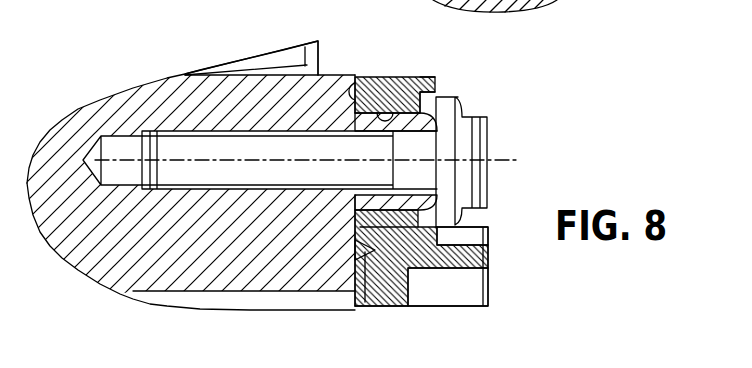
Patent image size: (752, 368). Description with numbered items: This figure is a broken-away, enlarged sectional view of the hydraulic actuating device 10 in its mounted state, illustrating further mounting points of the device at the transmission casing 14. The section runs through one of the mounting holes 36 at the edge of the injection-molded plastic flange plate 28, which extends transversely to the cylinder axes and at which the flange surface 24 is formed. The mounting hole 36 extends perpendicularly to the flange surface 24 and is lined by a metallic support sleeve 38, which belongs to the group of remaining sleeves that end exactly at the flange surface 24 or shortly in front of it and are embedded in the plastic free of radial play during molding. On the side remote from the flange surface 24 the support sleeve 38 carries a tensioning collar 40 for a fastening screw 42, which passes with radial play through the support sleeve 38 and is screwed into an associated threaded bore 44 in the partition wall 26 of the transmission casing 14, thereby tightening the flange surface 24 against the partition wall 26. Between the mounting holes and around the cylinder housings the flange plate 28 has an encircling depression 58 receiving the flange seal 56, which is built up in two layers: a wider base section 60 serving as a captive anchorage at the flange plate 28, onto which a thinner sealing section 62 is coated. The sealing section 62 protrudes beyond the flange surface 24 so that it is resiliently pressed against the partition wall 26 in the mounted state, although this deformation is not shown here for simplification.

The hydraulic actuating device 10 is at (413, 313).
The transmission casing 14 is at (282, 50).
The flange surface 24 is at (347, 77).
The partition wall 26 is at (327, 282).
The flange plate 28 is at (375, 83).
The mounting hole 36 is at (423, 77).
The support sleeve 38 is at (420, 100).
The tensioning collar 40 is at (465, 228).
The fastening screw 42 is at (293, 172).
The threaded bore 44 is at (133, 175).
The flange seal 56 is at (351, 254).
The encircling depression 58 is at (354, 308).
The base section 60 is at (406, 275).
The sealing section 62 is at (351, 247).